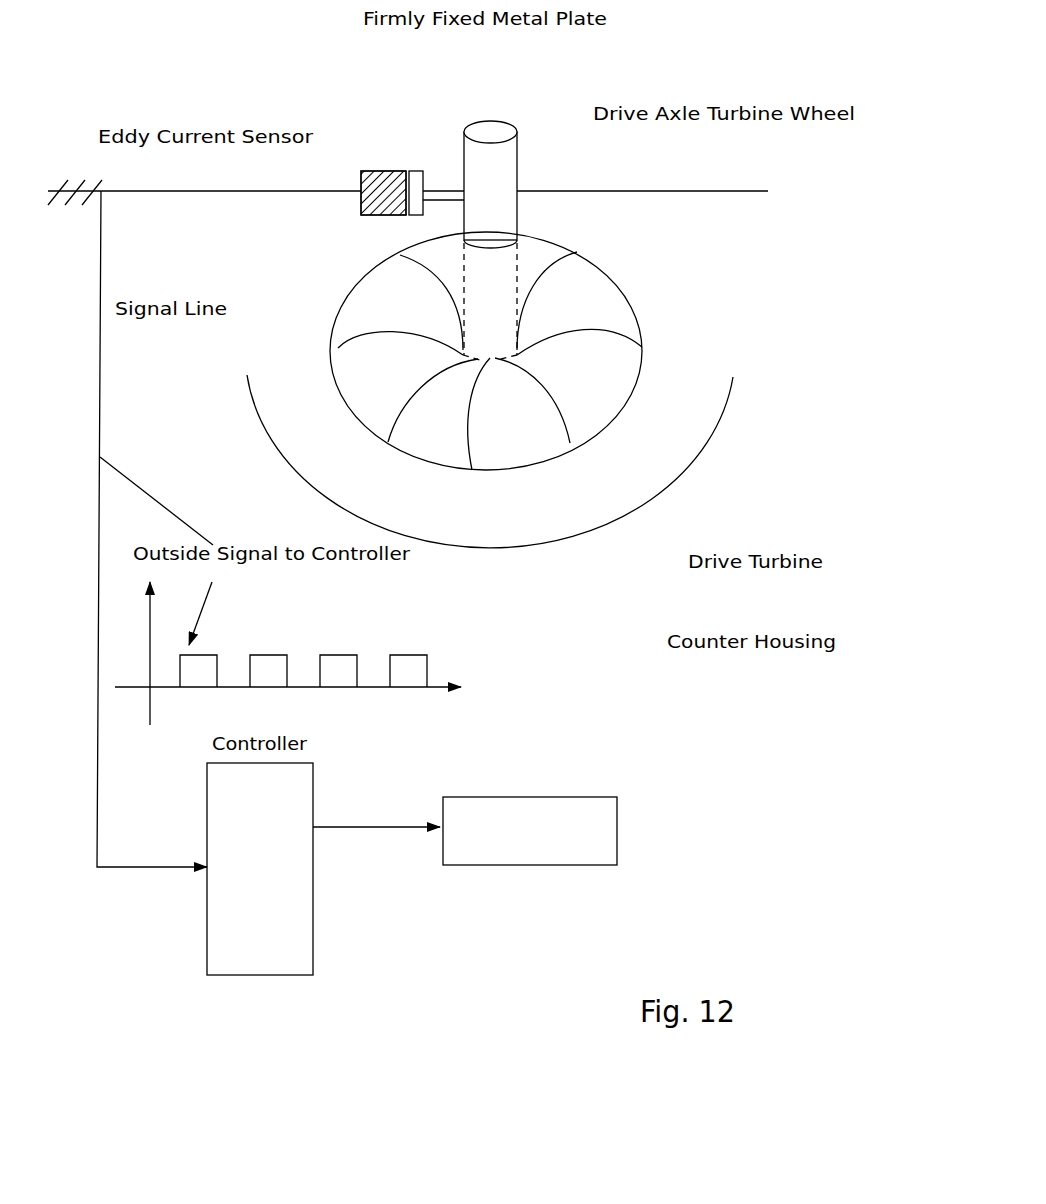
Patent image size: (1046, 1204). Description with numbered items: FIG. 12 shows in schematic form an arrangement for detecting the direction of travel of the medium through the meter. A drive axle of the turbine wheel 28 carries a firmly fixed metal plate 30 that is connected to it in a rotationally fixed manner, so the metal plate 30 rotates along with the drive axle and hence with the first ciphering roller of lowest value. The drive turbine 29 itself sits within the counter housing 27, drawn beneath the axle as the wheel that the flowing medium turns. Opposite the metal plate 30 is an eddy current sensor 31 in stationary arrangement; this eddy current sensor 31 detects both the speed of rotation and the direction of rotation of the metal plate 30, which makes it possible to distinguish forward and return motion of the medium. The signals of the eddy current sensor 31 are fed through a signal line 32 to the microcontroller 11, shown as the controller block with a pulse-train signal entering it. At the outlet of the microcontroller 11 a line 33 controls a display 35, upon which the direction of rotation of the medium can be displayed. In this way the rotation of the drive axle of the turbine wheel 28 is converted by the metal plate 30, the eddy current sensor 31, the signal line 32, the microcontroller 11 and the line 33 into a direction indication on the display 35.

The microcontroller 11 is at (248, 930).
The counter housing 27 is at (625, 513).
The drive axle turbine wheel 28 is at (518, 163).
The drive turbine 29 is at (600, 400).
The metal plate 30 is at (418, 163).
The eddy current sensor 31 is at (358, 163).
The signal line 32 is at (245, 193).
The line 33 is at (372, 827).
The display 35 is at (495, 850).